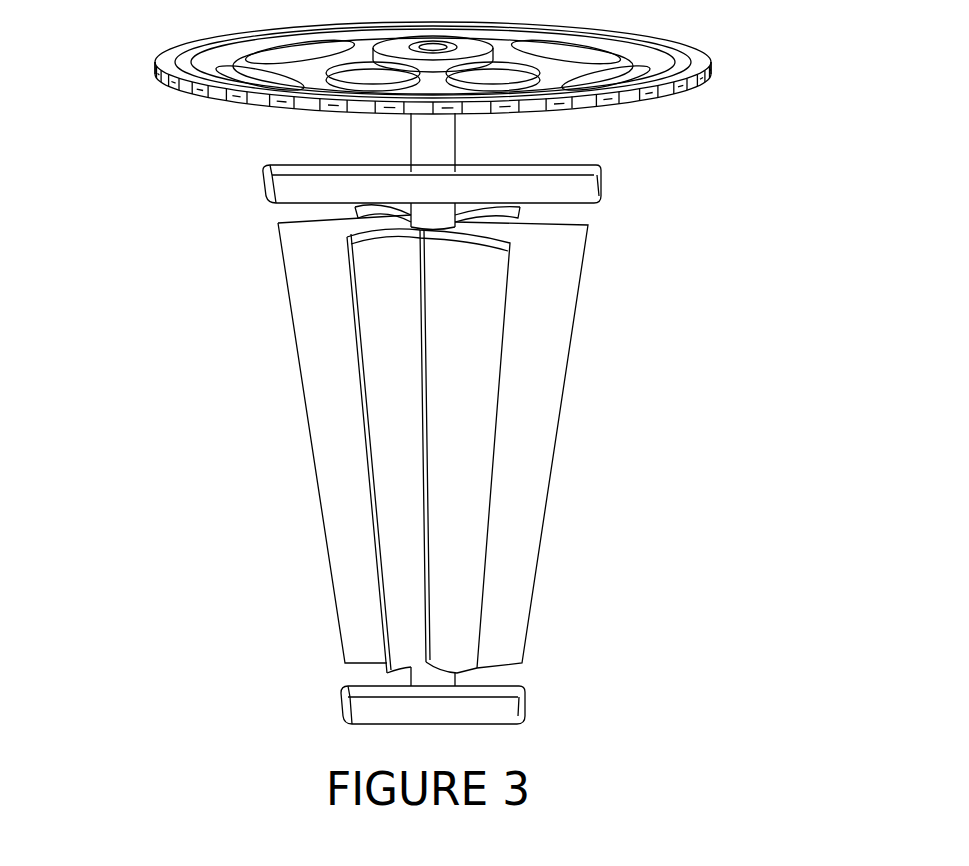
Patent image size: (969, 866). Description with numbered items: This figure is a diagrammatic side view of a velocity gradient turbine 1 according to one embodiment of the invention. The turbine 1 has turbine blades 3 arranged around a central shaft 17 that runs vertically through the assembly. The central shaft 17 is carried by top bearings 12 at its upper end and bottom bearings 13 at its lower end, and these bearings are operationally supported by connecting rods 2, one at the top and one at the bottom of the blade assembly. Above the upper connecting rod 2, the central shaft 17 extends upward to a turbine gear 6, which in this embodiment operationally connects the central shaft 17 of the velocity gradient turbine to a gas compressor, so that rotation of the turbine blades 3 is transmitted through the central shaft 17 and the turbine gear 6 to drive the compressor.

The turbine 1 is at (292, 469).
The connecting rods 2 is at (607, 183).
The turbine blades 3 is at (566, 424).
The turbine gear 6 is at (688, 46).
The top bearings 12 is at (448, 170).
The bottom bearings 13 is at (452, 690).
The central shaft 17 is at (410, 143).